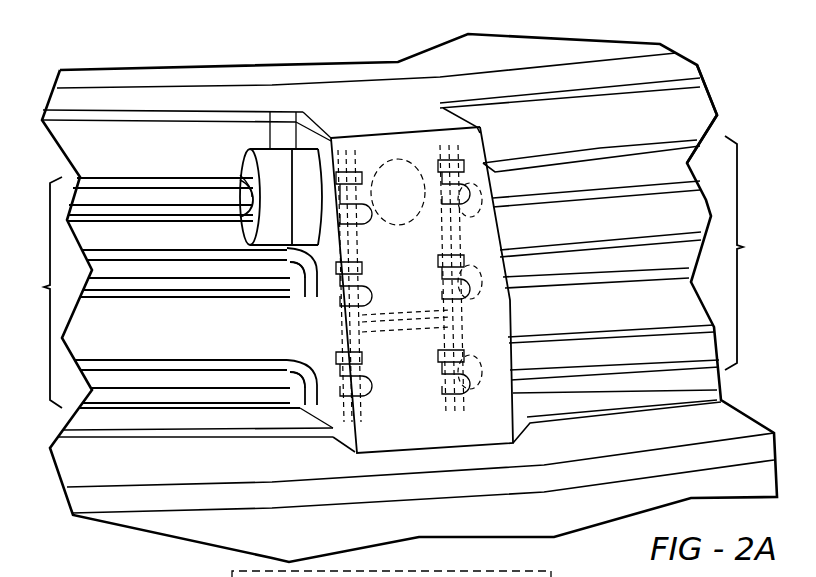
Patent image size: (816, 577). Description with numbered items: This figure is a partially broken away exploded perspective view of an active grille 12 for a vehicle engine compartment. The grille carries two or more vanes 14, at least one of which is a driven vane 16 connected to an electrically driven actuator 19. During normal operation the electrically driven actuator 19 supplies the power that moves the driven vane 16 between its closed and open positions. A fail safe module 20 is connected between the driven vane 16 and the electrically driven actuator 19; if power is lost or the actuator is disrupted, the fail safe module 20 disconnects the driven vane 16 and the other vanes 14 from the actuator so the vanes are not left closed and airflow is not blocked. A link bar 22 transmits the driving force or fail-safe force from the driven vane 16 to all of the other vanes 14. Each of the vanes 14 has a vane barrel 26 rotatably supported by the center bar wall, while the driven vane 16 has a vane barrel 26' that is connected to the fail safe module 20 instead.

The active grille 12 is at (724, 100).
The two or more vanes 14 is at (394, 272).
The driven vane 16 is at (196, 198).
The electrically driven actuator 19 is at (402, 180).
The fail safe module 20 is at (270, 150).
The link bar 22 is at (409, 337).
The vane barrel 26 is at (276, 325).
The vane barrel of the driven vane 26' is at (201, 117).